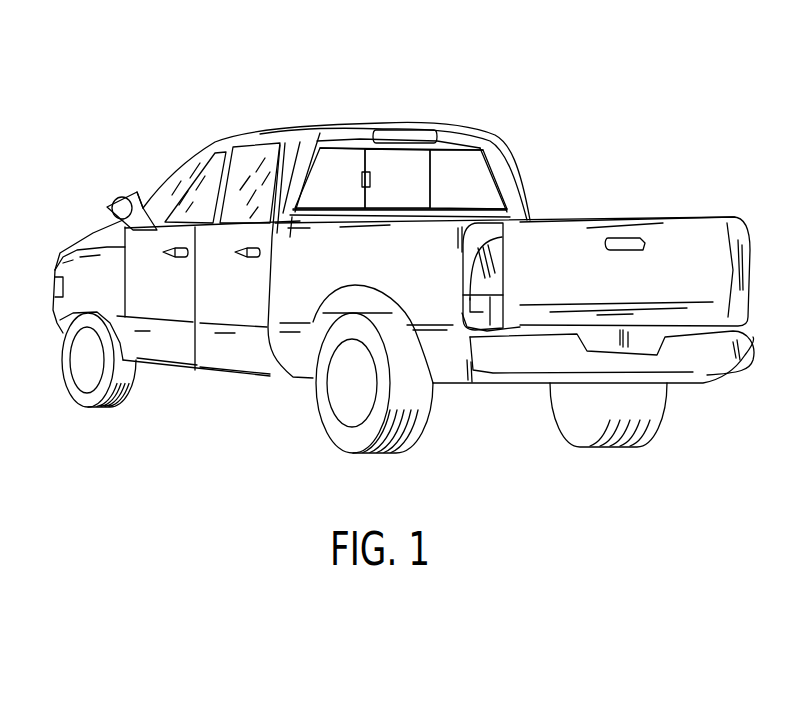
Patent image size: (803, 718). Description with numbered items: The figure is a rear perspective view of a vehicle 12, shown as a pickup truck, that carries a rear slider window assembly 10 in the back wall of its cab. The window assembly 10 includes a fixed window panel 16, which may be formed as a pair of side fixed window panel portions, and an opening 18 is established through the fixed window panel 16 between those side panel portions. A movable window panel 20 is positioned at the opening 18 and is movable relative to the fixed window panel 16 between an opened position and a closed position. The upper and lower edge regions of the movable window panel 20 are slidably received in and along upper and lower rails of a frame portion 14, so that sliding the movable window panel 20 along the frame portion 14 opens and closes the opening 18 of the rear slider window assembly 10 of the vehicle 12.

The rear slider window assembly 10 is at (463, 182).
The vehicle 12 is at (253, 90).
The frame portion 14 is at (327, 213).
The fixed window panel 16 is at (347, 157).
The opening 18 is at (487, 185).
The movable window panel 20 is at (413, 157).